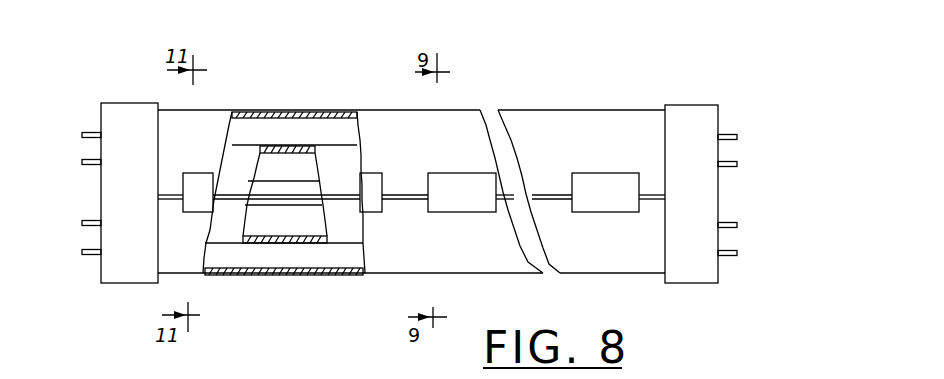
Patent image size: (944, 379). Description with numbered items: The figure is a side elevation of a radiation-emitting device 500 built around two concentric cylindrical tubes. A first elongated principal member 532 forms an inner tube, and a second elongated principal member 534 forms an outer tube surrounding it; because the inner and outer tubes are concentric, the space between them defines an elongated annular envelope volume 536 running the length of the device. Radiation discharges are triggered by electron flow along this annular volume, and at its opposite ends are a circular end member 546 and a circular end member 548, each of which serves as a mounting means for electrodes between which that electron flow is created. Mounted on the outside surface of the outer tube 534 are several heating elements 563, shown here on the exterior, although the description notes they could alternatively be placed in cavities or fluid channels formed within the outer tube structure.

The radiation-emitting device 500 is at (556, 82).
The first elongated principal member 532 is at (287, 150).
The second elongated principal member 534 is at (278, 275).
The elongated annular envelope volume 536 is at (342, 257).
The circular end member 546 is at (132, 265).
The circular end member 548 is at (697, 270).
The heating element 563 is at (200, 195).